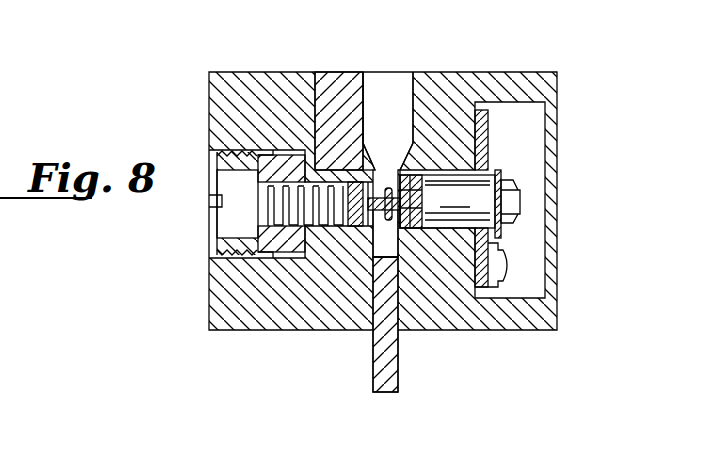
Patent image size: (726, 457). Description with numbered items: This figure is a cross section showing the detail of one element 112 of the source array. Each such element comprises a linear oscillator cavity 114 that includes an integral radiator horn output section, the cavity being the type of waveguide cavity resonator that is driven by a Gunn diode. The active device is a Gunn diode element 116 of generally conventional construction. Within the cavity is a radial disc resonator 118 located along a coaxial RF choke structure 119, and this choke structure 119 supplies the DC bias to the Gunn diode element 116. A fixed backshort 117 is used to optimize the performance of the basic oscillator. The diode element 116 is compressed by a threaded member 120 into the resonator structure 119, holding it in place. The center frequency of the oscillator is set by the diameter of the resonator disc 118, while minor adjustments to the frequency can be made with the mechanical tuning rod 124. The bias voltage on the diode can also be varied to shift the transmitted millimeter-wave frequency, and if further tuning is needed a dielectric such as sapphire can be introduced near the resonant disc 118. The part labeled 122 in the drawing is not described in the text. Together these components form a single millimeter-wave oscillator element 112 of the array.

The element 112 is at (538, 58).
The linear oscillator cavity 114 is at (399, 84).
The Gunn diode element 116 is at (355, 222).
The fixed backshort 117 is at (392, 393).
The radial disc resonator 118 is at (389, 212).
The coaxial RF choke structure 119 is at (385, 186).
The threaded member 120 is at (330, 203).
The adjusting screw assembly 122 is at (517, 185).
The mechanical tuning rod 124 is at (383, 232).